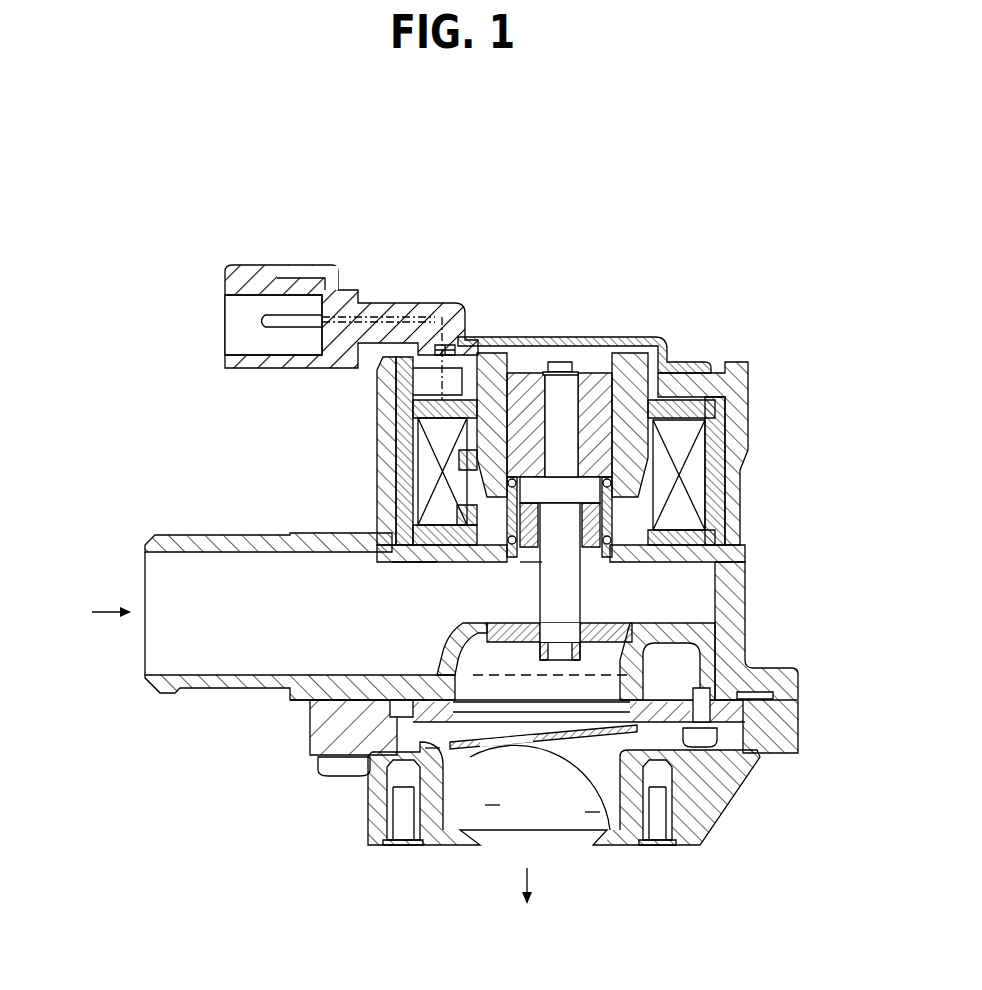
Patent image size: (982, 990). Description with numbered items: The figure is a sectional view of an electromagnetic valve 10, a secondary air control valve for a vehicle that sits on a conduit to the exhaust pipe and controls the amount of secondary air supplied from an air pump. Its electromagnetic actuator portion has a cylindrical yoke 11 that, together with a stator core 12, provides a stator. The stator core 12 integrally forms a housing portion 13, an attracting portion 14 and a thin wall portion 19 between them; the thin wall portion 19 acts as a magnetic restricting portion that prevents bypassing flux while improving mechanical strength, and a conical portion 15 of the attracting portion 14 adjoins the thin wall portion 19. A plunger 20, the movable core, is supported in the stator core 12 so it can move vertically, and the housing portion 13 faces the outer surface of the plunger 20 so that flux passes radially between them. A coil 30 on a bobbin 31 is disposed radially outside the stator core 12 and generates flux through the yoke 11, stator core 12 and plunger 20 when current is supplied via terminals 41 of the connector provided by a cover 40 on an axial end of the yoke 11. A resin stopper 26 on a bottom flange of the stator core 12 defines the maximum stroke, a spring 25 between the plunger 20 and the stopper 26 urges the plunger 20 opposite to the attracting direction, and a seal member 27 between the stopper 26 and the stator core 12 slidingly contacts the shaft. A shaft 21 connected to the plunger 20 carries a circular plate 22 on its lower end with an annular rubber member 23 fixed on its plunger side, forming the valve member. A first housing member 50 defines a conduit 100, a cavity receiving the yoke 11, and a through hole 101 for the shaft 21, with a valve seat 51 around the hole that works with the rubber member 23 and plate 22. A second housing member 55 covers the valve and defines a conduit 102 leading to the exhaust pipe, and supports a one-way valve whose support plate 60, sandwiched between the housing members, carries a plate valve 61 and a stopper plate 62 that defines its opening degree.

The electromagnetic valve 10 is at (748, 356).
The yoke 11 is at (717, 397).
The stator core 12 is at (509, 357).
The housing portion 13 is at (672, 357).
The attracting portion 14 is at (707, 490).
The conical portion 15 is at (612, 500).
The thin wall portion 19 is at (615, 470).
The plunger 20 is at (592, 390).
The shaft 21 is at (565, 603).
The circular plate 22 is at (630, 648).
The annular rubber member 23 is at (700, 637).
The spring 25 is at (460, 512).
The stopper 26 is at (710, 530).
The seal member 27 is at (530, 562).
The coil 30 is at (430, 440).
The bobbin 31 is at (437, 458).
The cover 40 is at (322, 264).
The terminals 41 is at (265, 325).
The first housing member 50 is at (740, 553).
The valve seat 51 is at (450, 700).
The second housing member 55 is at (720, 790).
The support plate 60 is at (757, 723).
The plate valve 61 is at (427, 843).
The stopper plate 62 is at (593, 815).
The conduit 100 is at (192, 583).
The through hole 101 is at (445, 752).
The conduit 102 is at (492, 807).